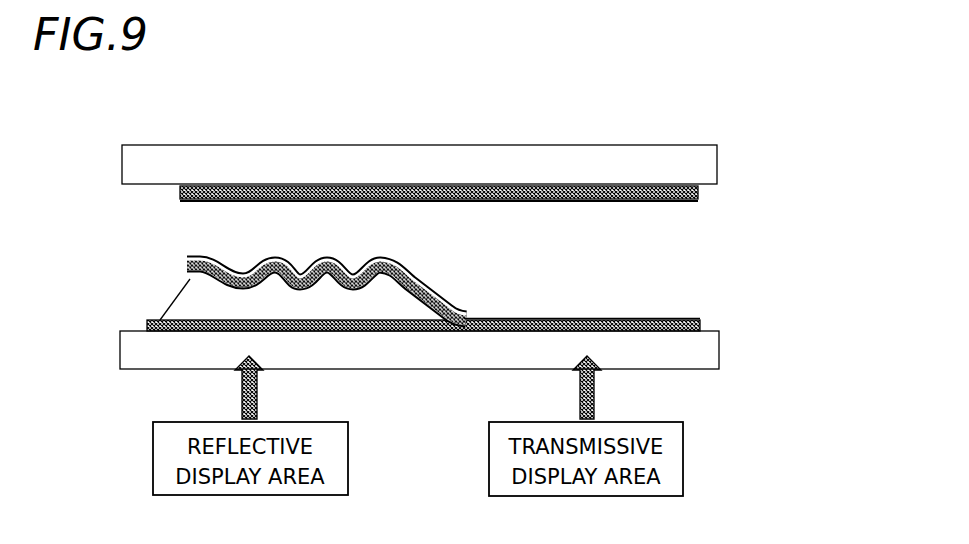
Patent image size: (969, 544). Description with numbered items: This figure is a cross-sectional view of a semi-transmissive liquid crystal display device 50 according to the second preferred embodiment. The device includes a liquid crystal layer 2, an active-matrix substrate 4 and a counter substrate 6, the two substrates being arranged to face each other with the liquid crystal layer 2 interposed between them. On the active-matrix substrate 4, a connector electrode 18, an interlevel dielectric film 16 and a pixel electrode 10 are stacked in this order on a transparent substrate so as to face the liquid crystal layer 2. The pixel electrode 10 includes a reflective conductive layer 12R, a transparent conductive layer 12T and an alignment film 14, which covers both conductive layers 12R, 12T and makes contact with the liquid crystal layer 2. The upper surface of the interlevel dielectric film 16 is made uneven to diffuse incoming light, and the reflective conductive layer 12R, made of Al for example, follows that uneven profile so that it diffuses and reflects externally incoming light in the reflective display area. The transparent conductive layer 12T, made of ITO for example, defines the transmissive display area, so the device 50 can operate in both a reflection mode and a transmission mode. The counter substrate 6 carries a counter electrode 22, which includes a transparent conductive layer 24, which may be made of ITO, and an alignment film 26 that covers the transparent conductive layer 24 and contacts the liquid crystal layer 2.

The liquid crystal layer 2 is at (704, 292).
The active-matrix substrate 4 is at (57, 238).
The counter substrate 6 is at (110, 148).
The pixel electrode 10 is at (180, 250).
The reflective conductive layer 12R is at (421, 283).
The transparent conductive layer 12T is at (513, 318).
The alignment film 14 is at (238, 272).
The interlevel dielectric film 16 is at (172, 292).
The connector electrode 18 is at (147, 322).
The counter electrode 22 is at (786, 180).
The transparent conductive layer 24 is at (698, 190).
The alignment film 26 is at (698, 200).
The semi-transmissive liquid crystal display device 50 is at (853, 213).